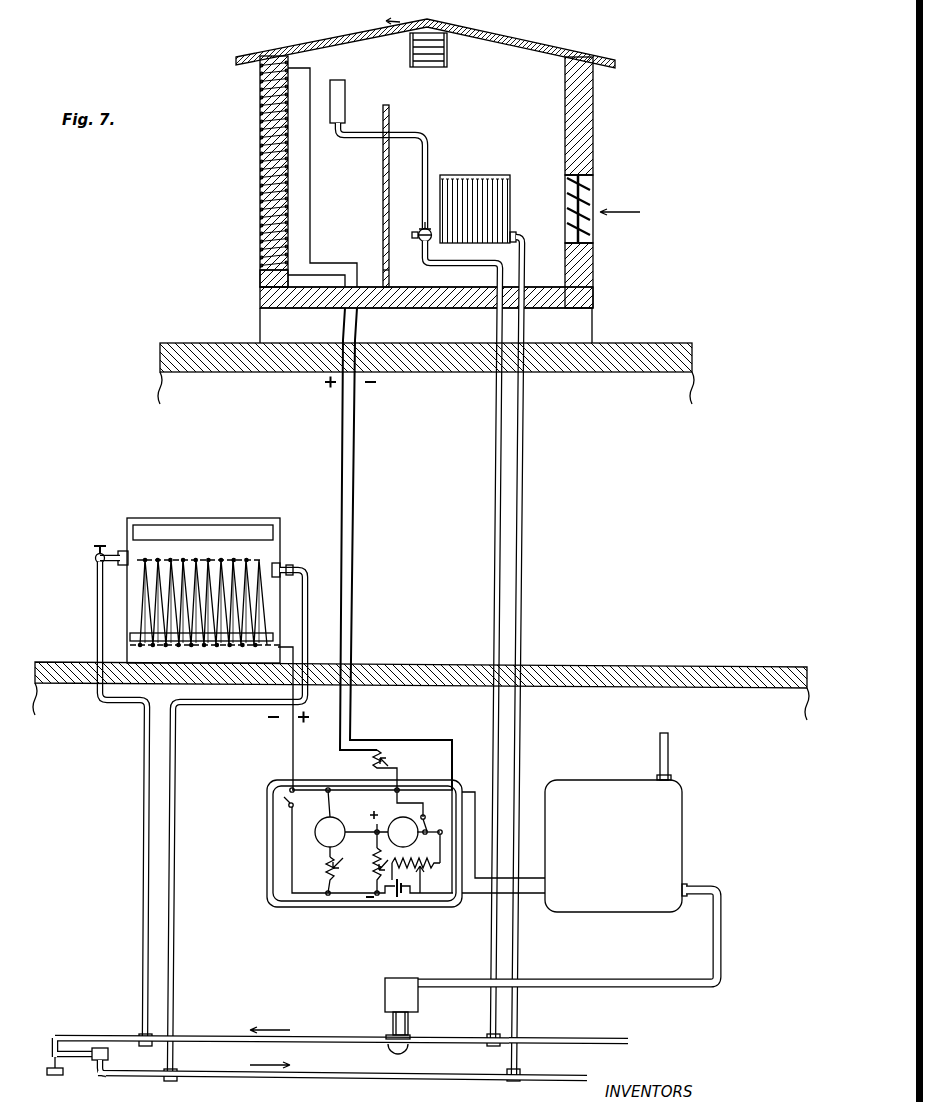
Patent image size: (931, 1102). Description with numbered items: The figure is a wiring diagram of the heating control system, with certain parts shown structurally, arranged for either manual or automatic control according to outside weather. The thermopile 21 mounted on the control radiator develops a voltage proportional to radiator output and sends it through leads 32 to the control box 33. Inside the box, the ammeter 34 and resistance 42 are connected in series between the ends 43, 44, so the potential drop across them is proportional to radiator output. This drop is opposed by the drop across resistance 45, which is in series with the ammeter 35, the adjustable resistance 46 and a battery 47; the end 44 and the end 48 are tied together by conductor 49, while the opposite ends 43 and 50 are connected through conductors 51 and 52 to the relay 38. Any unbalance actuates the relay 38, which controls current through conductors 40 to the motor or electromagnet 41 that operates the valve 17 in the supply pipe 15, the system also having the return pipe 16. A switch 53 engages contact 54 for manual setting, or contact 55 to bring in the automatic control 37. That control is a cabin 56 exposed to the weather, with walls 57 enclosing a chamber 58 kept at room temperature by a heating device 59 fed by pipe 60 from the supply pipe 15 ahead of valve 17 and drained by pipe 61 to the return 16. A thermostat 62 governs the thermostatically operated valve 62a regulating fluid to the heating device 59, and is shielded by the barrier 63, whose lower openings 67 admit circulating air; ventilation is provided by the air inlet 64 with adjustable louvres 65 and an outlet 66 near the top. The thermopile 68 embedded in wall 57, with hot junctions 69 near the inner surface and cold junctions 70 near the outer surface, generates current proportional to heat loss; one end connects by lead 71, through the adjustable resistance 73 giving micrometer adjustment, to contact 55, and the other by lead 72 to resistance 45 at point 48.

The supply pipe 15 is at (230, 1040).
The return pipe 16 is at (230, 1078).
The valve 17 is at (405, 1046).
The thermopile 21 is at (265, 612).
The leads 32 is at (292, 738).
The control box 33 is at (452, 778).
The ammeter 34 is at (315, 829).
The ammeter 35 is at (400, 812).
The automatic control 37 is at (252, 234).
The relay 38 is at (616, 822).
The conductors 40 is at (408, 990).
The motor or electromagnet 41 is at (393, 1022).
The resistance 42 is at (328, 868).
The end 43 is at (328, 785).
The end 44 is at (328, 896).
The resistance 45 is at (376, 860).
The adjustable resistance 46 is at (427, 880).
The battery 47 is at (392, 900).
The end 48 is at (372, 890).
The conductor 49 is at (345, 907).
The end 50 is at (352, 838).
The conductor 51 is at (475, 792).
The conductor 52 is at (362, 815).
The switch 53 is at (416, 859).
The contact 54 is at (443, 833).
The contact 55 is at (430, 817).
The control cabin 56 is at (592, 140).
The walls 57 is at (592, 104).
The chamber 58 is at (530, 72).
The heating device 59 is at (478, 175).
The pipe 60 is at (494, 530).
The pipe 61 is at (522, 530).
The thermostat 62 is at (345, 93).
The thermostatically operated valve 62a is at (420, 230).
The screen or barrier 63 is at (383, 190).
The air inlet 64 is at (592, 227).
The adjustable louvres 65 is at (592, 198).
The outlet 66 is at (447, 53).
The openings 67 is at (383, 268).
The thermopile 68 is at (270, 158).
The hot junctions 69 is at (285, 178).
The cold junctions 70 is at (262, 193).
The lead 71 is at (342, 440).
The lead 72 is at (356, 440).
The adjustable resistance 73 is at (370, 770).